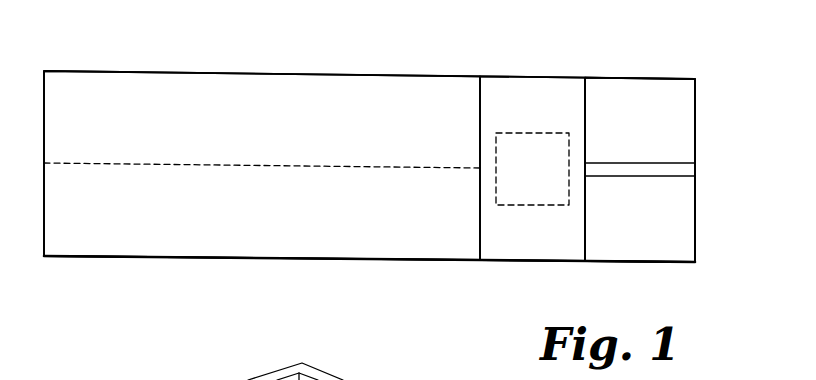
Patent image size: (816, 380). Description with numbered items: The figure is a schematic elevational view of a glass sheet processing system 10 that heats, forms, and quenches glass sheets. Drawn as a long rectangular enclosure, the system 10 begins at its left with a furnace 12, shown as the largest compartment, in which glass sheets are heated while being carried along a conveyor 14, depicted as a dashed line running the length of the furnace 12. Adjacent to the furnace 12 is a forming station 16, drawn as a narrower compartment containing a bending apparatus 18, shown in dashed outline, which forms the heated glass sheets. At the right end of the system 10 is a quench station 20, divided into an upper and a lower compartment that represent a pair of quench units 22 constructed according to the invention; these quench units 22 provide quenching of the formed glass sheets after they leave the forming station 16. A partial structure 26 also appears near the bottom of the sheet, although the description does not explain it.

The glass sheet processing system 10 is at (403, 62).
The furnace 12 is at (208, 71).
The conveyor 14 is at (215, 164).
The forming station 16 is at (507, 75).
The bending apparatus 18 is at (534, 205).
The quench station 20 is at (650, 78).
The quench units 22 is at (680, 118).
The roof / chevron structure 26 is at (392, 379).